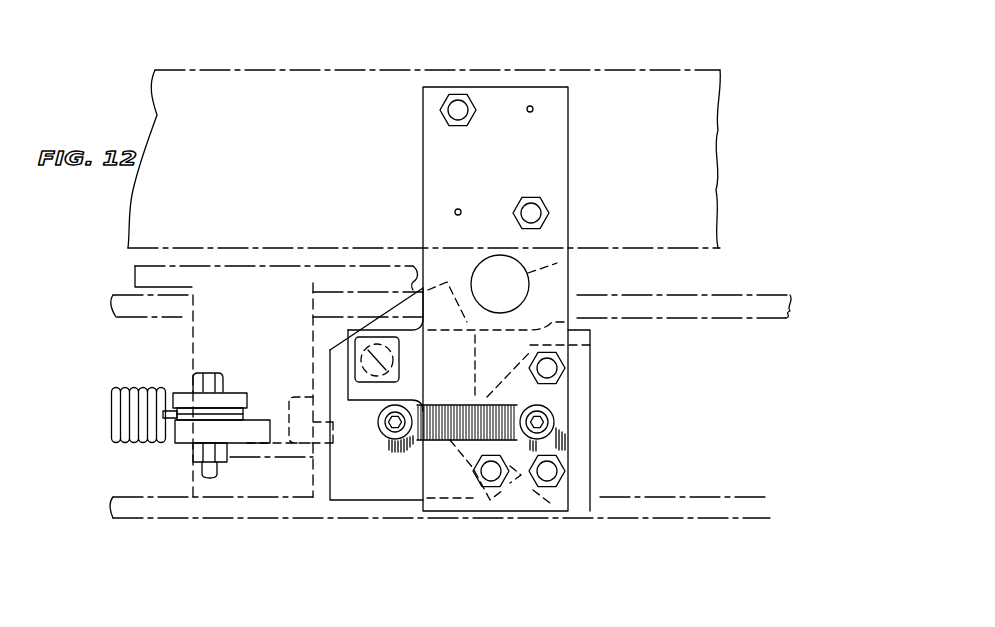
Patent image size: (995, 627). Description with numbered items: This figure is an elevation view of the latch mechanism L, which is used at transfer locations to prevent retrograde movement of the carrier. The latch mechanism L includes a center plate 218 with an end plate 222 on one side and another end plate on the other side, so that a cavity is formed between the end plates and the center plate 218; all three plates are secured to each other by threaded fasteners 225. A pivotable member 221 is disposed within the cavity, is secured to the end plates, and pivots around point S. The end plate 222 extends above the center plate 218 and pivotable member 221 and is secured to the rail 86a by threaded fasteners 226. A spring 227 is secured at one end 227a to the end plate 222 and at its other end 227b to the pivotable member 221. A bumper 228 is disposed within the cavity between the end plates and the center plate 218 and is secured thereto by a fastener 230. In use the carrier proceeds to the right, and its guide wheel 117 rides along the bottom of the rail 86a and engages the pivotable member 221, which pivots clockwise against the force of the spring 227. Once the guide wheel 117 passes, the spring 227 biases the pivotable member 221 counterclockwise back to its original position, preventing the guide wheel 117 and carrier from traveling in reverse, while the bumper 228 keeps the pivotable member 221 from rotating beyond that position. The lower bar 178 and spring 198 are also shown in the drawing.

The rail 86a is at (660, 70).
The guide wheel 117 is at (570, 262).
The lower bar 178 is at (688, 470).
The spring 198 is at (117, 437).
The center plate 218 is at (594, 331).
The pivotable member 221 is at (313, 376).
The end plate 222 is at (568, 282).
The threaded fasteners 225 is at (560, 367).
The threaded fasteners 226 is at (458, 92).
The spring 227 is at (598, 374).
The spring end 227a is at (552, 411).
The spring end 227b is at (375, 413).
The bumper 228 is at (520, 515).
The fastener 230 is at (487, 488).
The pivot point S is at (377, 358).
The latch mechanism L is at (328, 509).